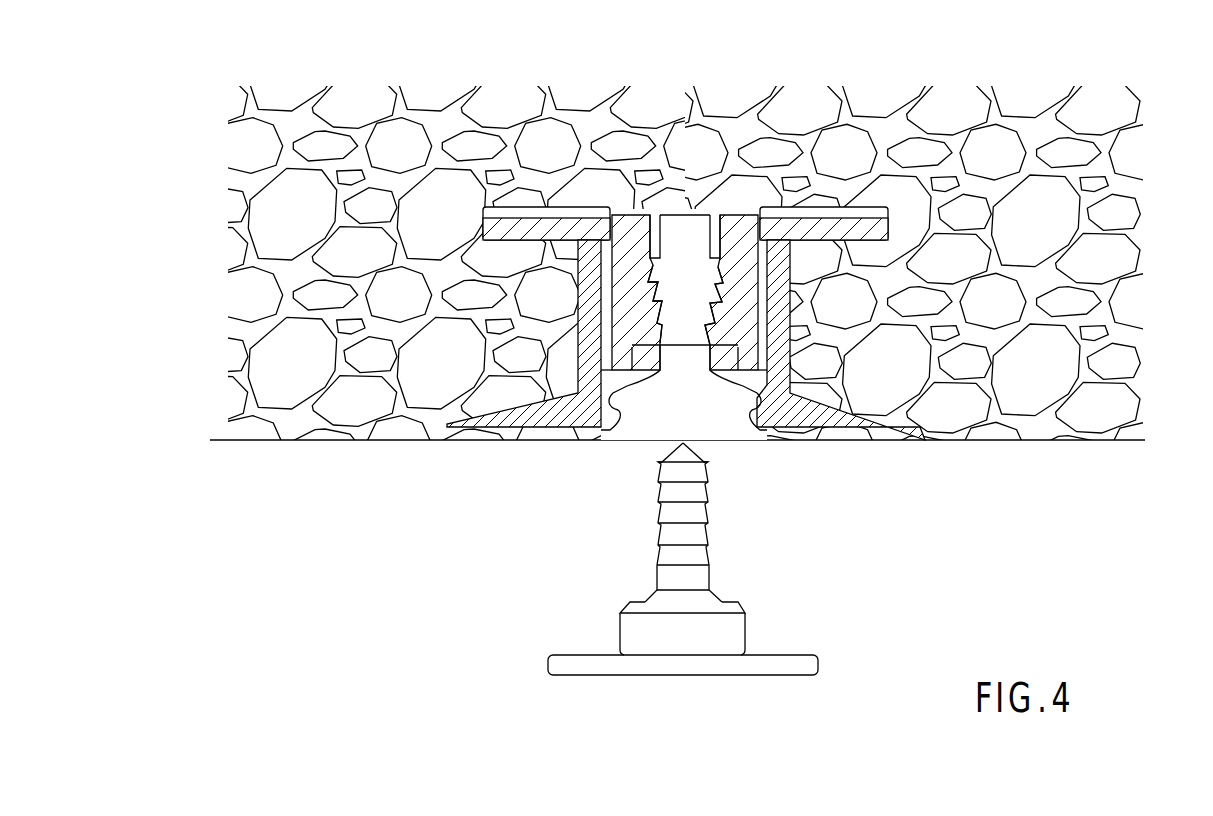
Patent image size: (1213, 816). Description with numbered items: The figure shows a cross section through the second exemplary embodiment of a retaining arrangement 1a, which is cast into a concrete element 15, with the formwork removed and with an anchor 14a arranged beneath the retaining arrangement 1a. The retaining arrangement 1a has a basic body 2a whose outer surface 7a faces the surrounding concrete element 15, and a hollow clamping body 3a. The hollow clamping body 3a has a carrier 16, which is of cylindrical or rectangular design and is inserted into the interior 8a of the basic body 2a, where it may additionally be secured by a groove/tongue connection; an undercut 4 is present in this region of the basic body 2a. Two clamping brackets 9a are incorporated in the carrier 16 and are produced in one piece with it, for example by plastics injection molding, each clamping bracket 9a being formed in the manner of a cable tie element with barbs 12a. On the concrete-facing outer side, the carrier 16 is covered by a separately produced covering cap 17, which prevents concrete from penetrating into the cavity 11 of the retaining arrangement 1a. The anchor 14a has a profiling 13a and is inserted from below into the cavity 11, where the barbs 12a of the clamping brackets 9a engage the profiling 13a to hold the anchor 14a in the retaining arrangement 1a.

The retaining arrangement 1a is at (791, 286).
The basic body 2a is at (583, 320).
The hollow clamping body 3a is at (742, 242).
The undercut 4 is at (688, 410).
The outer surface 7a is at (673, 286).
The interior 8a is at (722, 268).
The clamping bracket 9a is at (628, 337).
The cavity 11 is at (678, 333).
The barb 12a is at (651, 283).
The profiling 13a is at (698, 535).
The anchor 14a is at (718, 638).
The concrete element 15 is at (930, 165).
The carrier 16 is at (600, 228).
The covering cap 17 is at (510, 208).